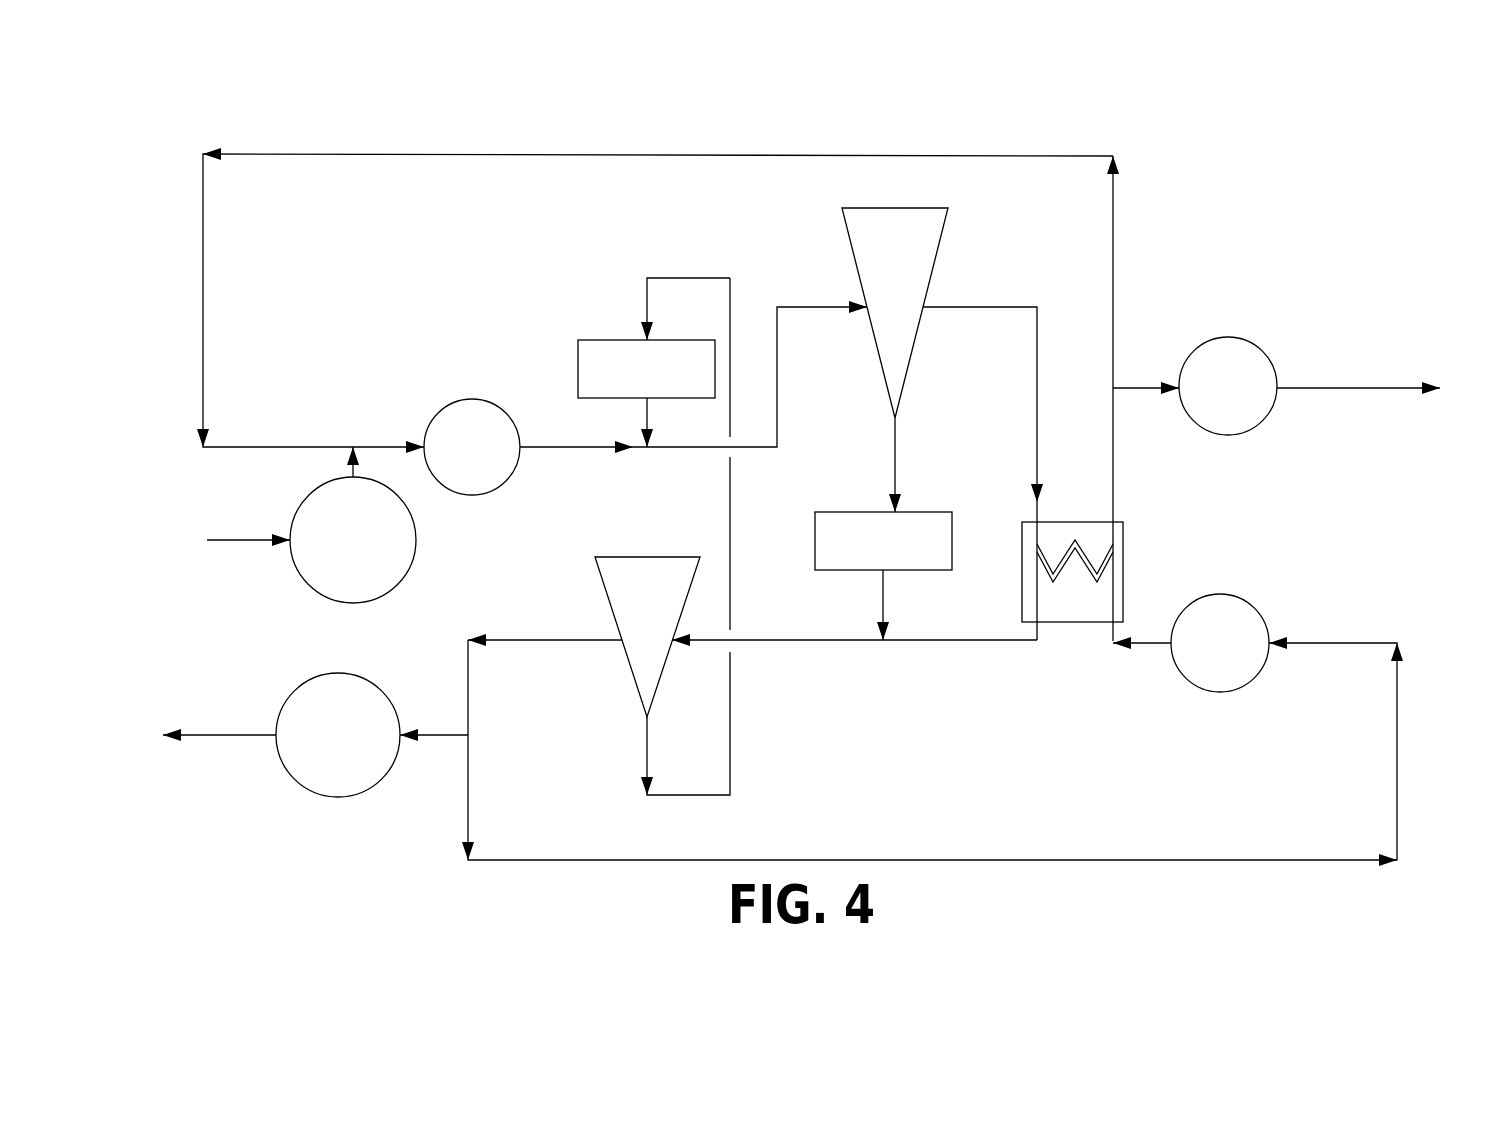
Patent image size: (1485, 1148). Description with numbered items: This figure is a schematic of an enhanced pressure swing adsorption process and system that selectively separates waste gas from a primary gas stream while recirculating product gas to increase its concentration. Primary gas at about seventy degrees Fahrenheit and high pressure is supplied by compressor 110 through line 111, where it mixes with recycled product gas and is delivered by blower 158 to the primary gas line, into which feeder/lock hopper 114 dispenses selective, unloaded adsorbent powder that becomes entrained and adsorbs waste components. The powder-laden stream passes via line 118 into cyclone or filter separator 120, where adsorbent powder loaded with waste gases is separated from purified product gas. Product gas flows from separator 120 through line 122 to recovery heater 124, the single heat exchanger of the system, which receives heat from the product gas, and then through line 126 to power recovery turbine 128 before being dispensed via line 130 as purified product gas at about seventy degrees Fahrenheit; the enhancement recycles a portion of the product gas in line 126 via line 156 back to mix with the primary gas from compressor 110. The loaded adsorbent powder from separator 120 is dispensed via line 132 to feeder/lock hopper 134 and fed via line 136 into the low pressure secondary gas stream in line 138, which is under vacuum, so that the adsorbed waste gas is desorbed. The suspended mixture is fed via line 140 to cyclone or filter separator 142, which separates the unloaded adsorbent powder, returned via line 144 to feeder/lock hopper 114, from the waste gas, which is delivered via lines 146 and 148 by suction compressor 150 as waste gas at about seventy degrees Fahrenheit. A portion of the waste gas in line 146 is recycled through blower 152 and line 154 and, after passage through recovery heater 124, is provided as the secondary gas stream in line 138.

The compressor 110 is at (418, 534).
The line 111 is at (350, 476).
The feeder/lock hopper 114 is at (601, 340).
The line 118 is at (777, 386).
The cyclone or filter separator 120 is at (913, 345).
The line 122 is at (1038, 355).
The recovery heater 124 is at (1124, 537).
The line 126 is at (1136, 388).
The power recovery turbine 128 is at (1223, 338).
The line 130 is at (1420, 388).
The line 132 is at (895, 443).
The feeder/lock hopper 134 is at (938, 512).
The line 136 is at (885, 595).
The line 138 is at (973, 640).
The line 140 is at (755, 639).
The cyclone or filter separator 142 is at (603, 591).
The line 144 is at (730, 737).
The line 146 is at (470, 690).
The line 148 is at (440, 735).
The suction compressor 150 is at (328, 672).
The blower 152 is at (1252, 596).
The line 154 is at (1155, 642).
The line 156 is at (275, 446).
The blower 158 is at (503, 410).